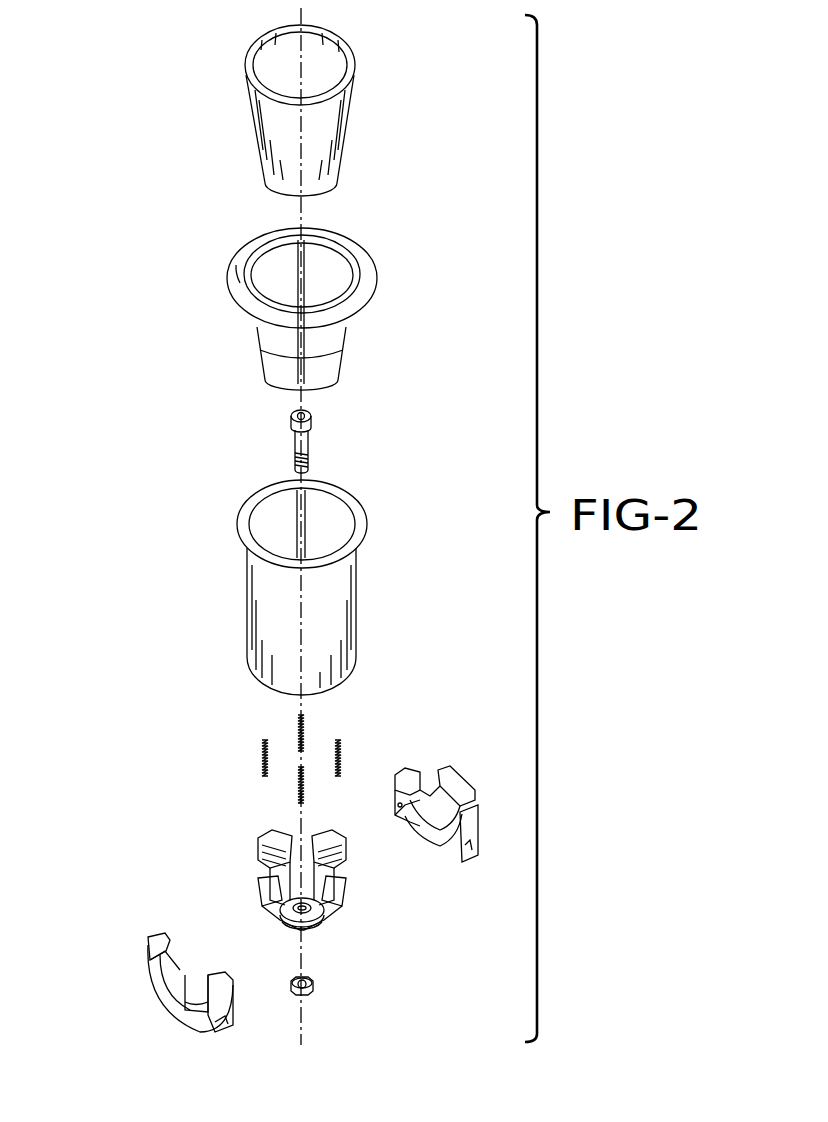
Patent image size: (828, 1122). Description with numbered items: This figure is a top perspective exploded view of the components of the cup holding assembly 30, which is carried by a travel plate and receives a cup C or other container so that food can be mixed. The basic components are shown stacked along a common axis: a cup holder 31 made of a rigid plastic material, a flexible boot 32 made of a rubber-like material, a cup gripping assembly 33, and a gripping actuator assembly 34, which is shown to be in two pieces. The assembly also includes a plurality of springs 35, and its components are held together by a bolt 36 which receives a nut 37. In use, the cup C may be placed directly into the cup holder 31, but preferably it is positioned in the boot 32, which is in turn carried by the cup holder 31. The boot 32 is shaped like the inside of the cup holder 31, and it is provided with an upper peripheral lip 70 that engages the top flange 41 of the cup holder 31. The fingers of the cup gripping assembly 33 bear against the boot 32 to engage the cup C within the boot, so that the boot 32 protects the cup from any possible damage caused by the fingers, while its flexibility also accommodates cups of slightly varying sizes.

The cup holding assembly 30 is at (93, 146).
The cup C is at (330, 125).
The flexible boot 32 is at (350, 231).
The upper peripheral lip 70 is at (238, 282).
The bolt 36 is at (298, 440).
The top flange 41 is at (340, 490).
The cup holder 31 is at (366, 609).
The springs 35 is at (298, 718).
The gripping actuator assembly 34 is at (457, 760).
The cup gripping assembly 33 is at (248, 884).
The nut 37 is at (312, 980).